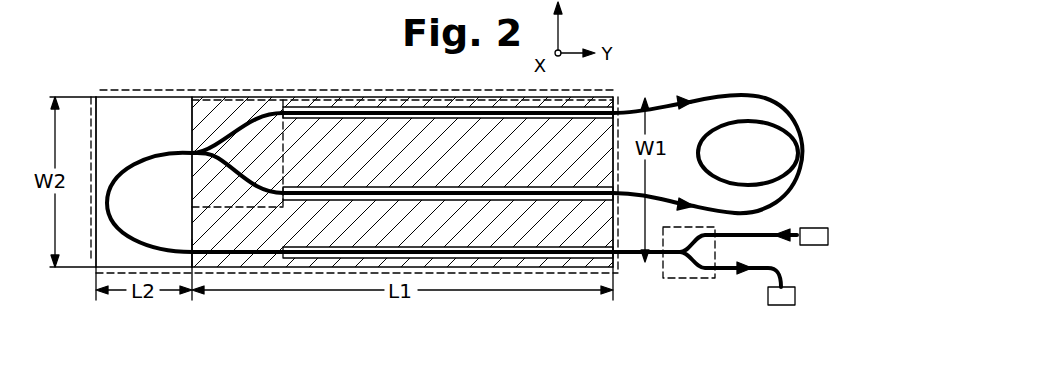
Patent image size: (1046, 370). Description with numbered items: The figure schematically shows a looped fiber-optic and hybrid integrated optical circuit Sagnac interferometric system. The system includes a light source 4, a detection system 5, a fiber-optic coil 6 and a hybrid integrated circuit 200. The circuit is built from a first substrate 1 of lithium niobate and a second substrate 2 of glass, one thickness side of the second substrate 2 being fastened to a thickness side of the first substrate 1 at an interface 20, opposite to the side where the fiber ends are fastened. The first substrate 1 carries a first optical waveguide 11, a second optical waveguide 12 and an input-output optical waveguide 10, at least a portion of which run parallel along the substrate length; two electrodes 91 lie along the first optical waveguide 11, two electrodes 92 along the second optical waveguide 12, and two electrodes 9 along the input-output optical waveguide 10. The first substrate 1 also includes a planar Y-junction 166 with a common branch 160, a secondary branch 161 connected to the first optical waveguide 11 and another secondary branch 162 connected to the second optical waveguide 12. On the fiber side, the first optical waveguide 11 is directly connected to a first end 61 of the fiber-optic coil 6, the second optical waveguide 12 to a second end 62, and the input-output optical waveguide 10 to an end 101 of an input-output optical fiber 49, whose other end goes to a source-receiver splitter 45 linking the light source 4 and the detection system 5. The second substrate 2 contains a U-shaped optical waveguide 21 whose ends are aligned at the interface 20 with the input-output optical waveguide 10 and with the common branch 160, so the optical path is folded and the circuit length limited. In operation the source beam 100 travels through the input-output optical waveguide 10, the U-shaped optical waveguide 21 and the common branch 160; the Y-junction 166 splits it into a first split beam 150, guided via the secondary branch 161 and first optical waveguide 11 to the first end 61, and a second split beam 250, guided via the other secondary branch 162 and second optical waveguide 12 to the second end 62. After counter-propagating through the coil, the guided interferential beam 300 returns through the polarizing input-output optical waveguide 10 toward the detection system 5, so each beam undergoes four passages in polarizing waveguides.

The first substrate 1 is at (245, 268).
The second substrate 2 is at (122, 97).
The light source 4 is at (830, 237).
The detection system 5 is at (782, 306).
The fiber-optic coil 6 is at (775, 128).
The electrodes 9 is at (530, 250).
The input-output optical waveguide 10 is at (468, 258).
The first optical waveguide 11 is at (468, 187).
The second optical waveguide 12 is at (394, 112).
The interface 20 is at (192, 255).
The U-shaped optical waveguide 21 is at (155, 153).
The source-receiver splitter 45 is at (688, 278).
The input-output optical fiber 49 is at (657, 268).
The first end of the fiber-optic coil 61 is at (616, 188).
The second end of the fiber-optic coil 62 is at (617, 97).
The electrodes 91 is at (500, 190).
The electrodes 92 is at (331, 107).
The source beam 100 is at (780, 240).
The end of the input-output optical fiber 101 is at (632, 268).
The first split beam 150 is at (692, 200).
The common branch 160 is at (203, 147).
The secondary branch 161 is at (243, 165).
The other secondary branch 162 is at (240, 133).
The junction 166 is at (233, 210).
The hybrid integrated circuit 200 is at (93, 237).
The second split beam 250 is at (681, 97).
The guided interferential beam 300 is at (740, 270).